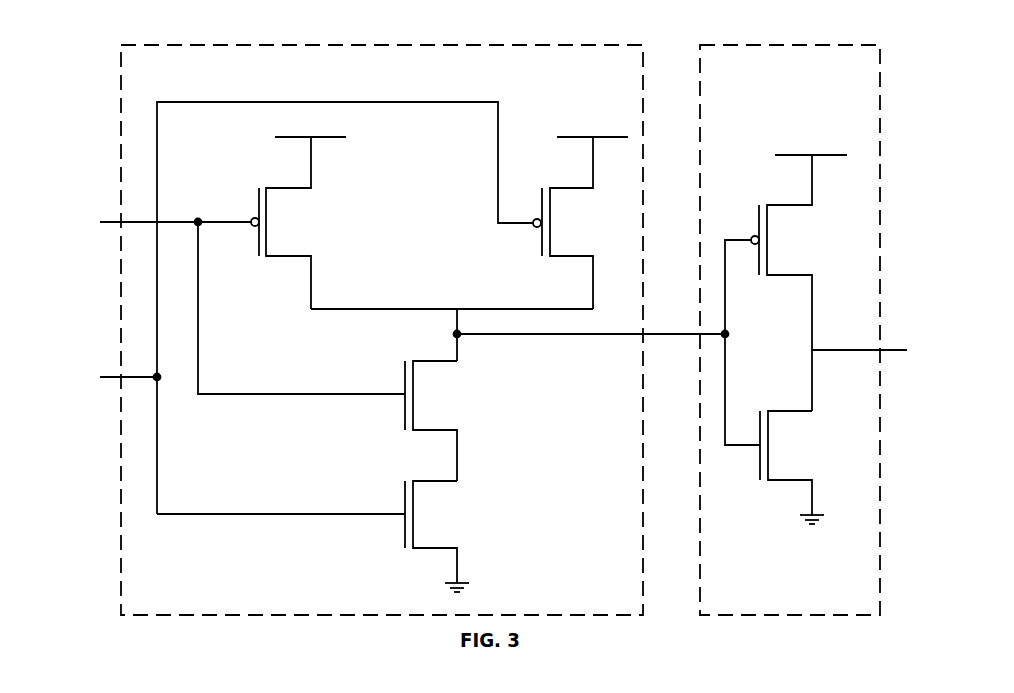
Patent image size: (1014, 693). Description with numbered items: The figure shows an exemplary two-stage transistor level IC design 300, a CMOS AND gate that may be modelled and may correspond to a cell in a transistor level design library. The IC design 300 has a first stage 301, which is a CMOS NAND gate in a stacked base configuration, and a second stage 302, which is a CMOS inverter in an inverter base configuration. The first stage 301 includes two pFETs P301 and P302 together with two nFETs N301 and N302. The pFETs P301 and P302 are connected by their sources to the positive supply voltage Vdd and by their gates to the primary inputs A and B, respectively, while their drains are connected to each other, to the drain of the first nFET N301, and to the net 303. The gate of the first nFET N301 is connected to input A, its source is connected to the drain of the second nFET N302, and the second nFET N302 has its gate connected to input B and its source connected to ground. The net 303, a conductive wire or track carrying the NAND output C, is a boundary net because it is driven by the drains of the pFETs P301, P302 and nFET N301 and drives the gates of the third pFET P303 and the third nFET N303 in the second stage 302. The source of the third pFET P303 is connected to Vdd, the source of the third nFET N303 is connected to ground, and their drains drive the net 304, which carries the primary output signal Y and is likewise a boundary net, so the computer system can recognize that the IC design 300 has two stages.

The IC design 300 is at (100, 38).
The first stage 301 is at (437, 71).
The second stage 302 is at (855, 71).
The net 303 is at (598, 335).
The net 304 is at (862, 351).
The first pFET P301 is at (302, 214).
The second pFET P302 is at (585, 214).
The third pFET P303 is at (803, 274).
The first nFET N301 is at (434, 421).
The second nFET N302 is at (437, 536).
The third nFET N303 is at (792, 467).